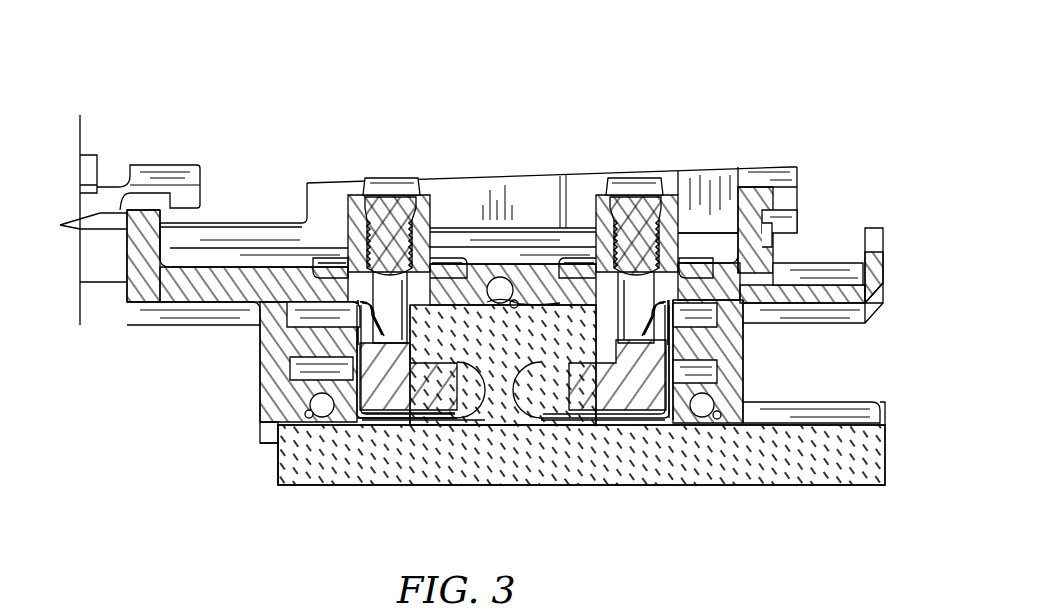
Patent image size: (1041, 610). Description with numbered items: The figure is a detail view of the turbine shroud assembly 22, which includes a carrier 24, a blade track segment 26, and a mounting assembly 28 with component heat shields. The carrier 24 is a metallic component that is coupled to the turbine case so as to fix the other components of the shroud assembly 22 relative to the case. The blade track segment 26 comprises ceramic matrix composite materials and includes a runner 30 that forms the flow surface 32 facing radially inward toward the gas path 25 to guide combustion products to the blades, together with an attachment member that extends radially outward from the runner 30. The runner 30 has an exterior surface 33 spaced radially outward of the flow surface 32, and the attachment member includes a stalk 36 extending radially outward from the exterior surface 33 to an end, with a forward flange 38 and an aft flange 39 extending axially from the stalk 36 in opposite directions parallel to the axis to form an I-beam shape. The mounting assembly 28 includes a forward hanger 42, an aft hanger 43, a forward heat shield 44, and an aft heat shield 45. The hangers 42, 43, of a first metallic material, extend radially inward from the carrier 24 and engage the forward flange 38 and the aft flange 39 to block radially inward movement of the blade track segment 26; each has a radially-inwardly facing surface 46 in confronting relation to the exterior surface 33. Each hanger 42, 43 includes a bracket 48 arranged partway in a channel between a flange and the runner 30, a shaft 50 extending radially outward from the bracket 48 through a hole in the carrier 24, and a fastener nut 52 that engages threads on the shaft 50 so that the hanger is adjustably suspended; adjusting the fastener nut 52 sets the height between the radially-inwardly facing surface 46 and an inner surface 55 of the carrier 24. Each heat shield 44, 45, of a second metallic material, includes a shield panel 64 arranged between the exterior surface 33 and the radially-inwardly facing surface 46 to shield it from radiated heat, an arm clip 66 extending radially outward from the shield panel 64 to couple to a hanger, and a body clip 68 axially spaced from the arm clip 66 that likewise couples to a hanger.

The shroud assembly 22 is at (98, 80).
The carrier 24 is at (260, 207).
The gas path 25 is at (567, 563).
The blade track segment 26 is at (284, 500).
The mounting assembly 28 is at (718, 163).
The runner 30 is at (376, 490).
The flow surface 32 is at (561, 296).
The exterior surface 33 is at (426, 420).
The stalk 36 is at (483, 380).
The forward flange 38 is at (440, 298).
The aft flange 39 is at (598, 300).
The forward hanger 42 is at (327, 210).
The aft hanger 43 is at (678, 186).
The forward heat shield 44 is at (343, 388).
The aft heat shield 45 is at (686, 377).
The radially-inwardly facing surface 46 is at (400, 421).
The bracket 48 is at (692, 382).
The shaft 50 is at (360, 283).
The fastener nut 52 is at (446, 258).
The inner surface 55 is at (670, 336).
The shield panel 64 is at (430, 422).
The arm clip 66 is at (355, 335).
The body clip 68 is at (447, 420).